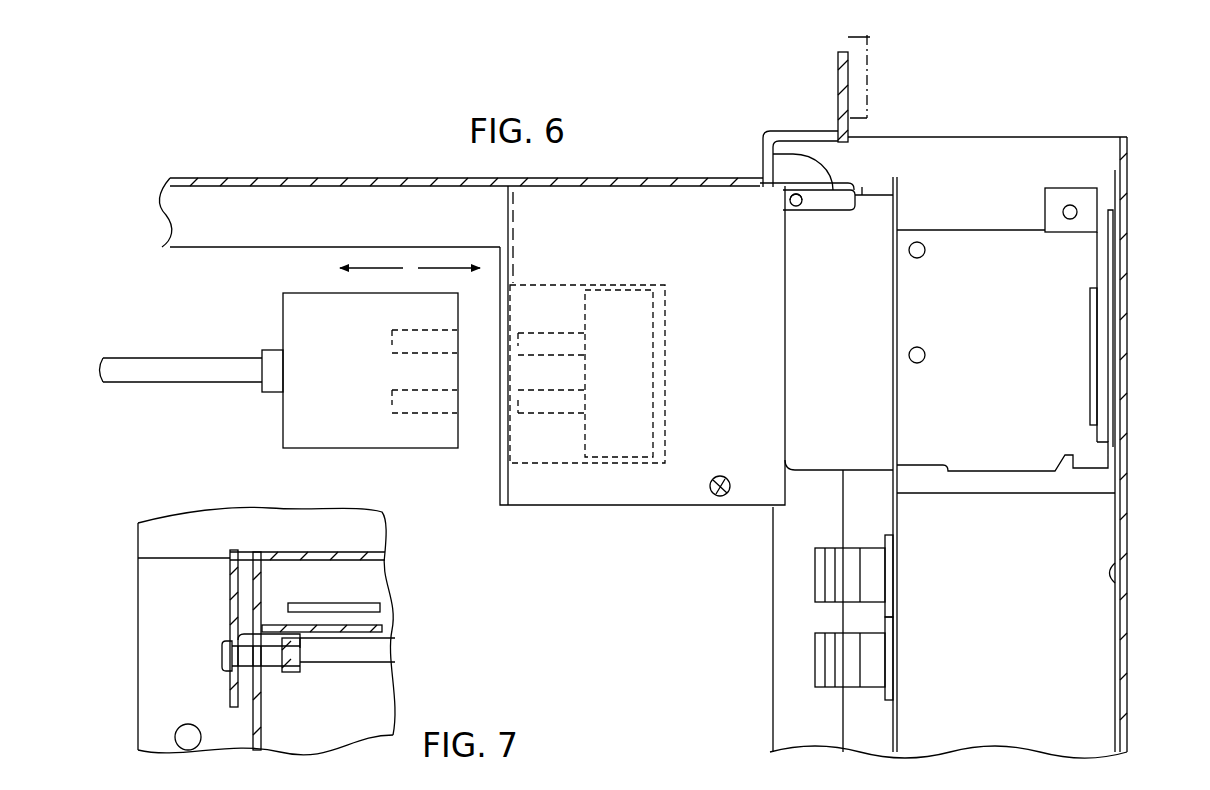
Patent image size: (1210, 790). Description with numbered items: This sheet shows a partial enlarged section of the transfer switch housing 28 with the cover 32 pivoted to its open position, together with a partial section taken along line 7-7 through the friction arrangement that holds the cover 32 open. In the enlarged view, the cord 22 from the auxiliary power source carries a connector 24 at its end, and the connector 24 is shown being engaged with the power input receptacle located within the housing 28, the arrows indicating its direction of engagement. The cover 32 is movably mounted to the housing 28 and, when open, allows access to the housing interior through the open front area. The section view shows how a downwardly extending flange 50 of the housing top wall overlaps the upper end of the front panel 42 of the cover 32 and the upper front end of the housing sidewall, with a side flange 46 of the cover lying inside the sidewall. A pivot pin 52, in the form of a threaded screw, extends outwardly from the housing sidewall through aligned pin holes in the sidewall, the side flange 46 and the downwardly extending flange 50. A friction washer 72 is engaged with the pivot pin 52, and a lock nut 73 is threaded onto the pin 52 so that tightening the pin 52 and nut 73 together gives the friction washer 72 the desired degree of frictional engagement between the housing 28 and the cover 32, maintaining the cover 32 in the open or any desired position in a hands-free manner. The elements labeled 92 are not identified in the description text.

In FIG. 6, the section line 7- 7 is at (790, 112).
In FIG. 6, the cord 22 is at (186, 358).
In FIG. 6, the connector 24 is at (372, 449).
In FIG. 6, the housing 28 is at (1100, 128).
In FIG. 6, the cover 32 is at (360, 179).
In FIG. 7, the front panel 42 is at (357, 627).
In FIG. 7, the side flanges 46 is at (243, 645).
In FIG. 7, the downwardly extending flange 50 is at (233, 607).
In FIG. 7, the pivot pin 52 is at (224, 662).
In FIG. 7, the friction washers 72 is at (240, 673).
In FIG. 7, the lock nut 73 is at (265, 673).
In FIG. 6, the terminal blocks 92 is at (812, 578).